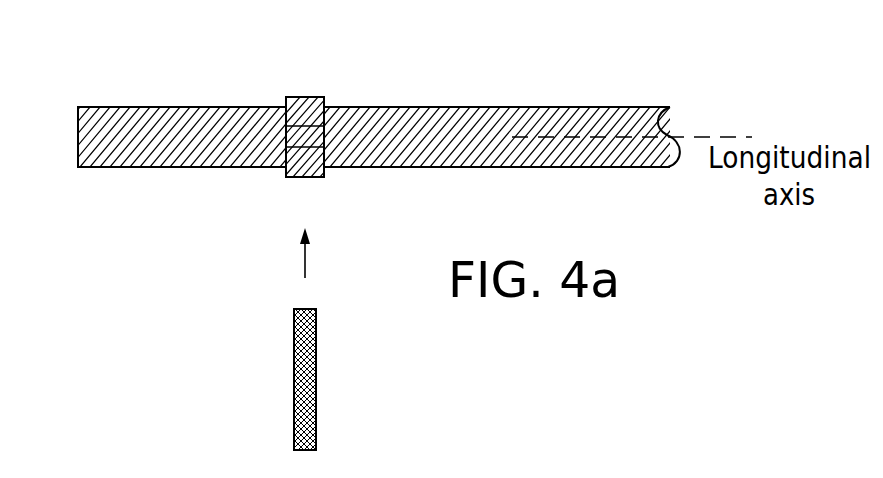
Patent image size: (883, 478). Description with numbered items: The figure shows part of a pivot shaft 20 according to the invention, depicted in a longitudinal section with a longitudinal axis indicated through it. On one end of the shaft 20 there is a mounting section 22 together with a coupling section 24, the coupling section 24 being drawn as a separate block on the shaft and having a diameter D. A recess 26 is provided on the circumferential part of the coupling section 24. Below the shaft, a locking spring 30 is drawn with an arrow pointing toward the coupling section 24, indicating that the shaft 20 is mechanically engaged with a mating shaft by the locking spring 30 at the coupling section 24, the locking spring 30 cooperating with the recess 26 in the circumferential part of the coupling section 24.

The shaft 20 is at (365, 143).
The mounting section 22 is at (207, 106).
The coupling section 24 is at (305, 96).
The recess 26 is at (304, 130).
The locking spring 30 is at (317, 348).